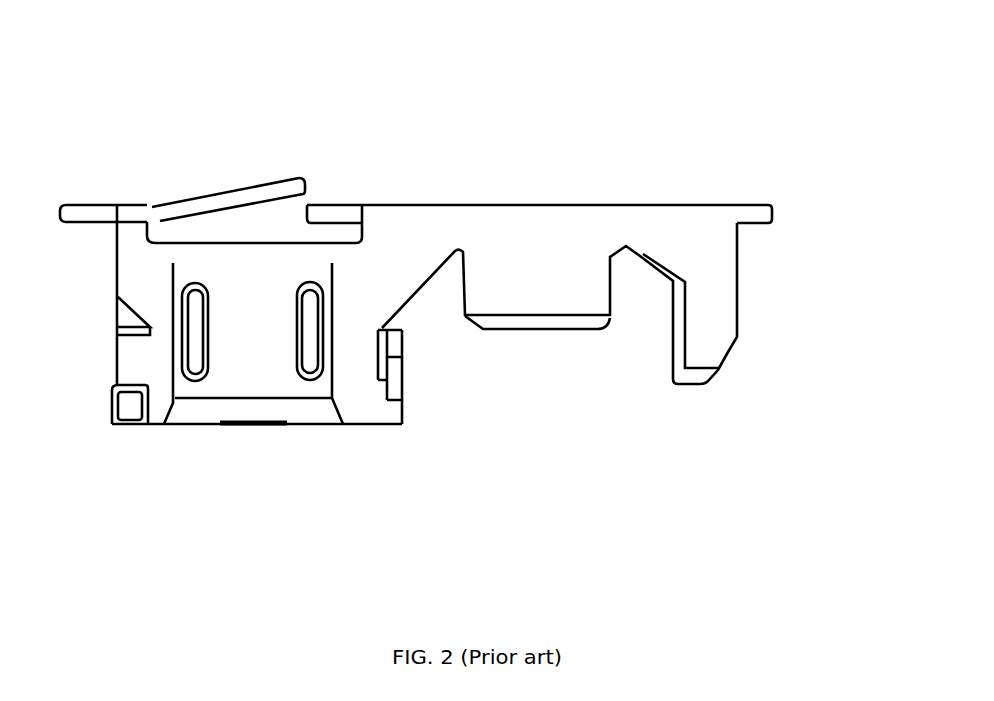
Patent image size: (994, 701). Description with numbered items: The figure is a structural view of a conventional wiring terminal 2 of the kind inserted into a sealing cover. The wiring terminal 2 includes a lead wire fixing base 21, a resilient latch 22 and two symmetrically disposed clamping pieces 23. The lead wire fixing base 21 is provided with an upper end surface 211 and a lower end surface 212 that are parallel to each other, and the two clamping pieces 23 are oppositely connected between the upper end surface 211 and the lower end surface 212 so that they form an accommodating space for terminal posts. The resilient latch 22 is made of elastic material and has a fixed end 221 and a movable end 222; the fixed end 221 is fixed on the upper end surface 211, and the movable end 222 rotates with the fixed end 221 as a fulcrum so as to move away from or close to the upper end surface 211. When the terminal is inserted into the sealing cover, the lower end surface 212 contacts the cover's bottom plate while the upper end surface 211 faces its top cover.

The wiring terminal 2 is at (849, 104).
The lead wire fixing base 21 is at (536, 246).
The upper end surface 211 is at (391, 208).
The lower end surface 212 is at (258, 436).
The resilient latch 22 is at (88, 85).
The fixed end 221 is at (151, 206).
The movable end 222 is at (298, 179).
The clamping piece 23 is at (256, 350).